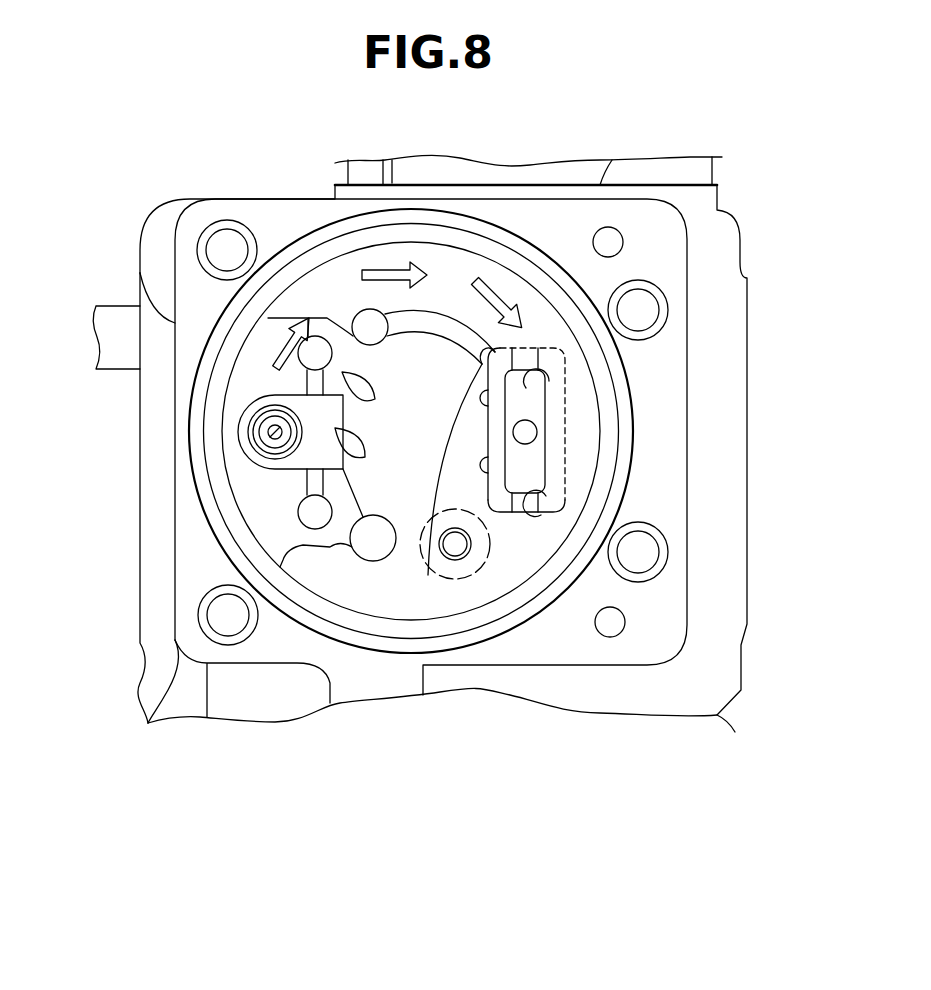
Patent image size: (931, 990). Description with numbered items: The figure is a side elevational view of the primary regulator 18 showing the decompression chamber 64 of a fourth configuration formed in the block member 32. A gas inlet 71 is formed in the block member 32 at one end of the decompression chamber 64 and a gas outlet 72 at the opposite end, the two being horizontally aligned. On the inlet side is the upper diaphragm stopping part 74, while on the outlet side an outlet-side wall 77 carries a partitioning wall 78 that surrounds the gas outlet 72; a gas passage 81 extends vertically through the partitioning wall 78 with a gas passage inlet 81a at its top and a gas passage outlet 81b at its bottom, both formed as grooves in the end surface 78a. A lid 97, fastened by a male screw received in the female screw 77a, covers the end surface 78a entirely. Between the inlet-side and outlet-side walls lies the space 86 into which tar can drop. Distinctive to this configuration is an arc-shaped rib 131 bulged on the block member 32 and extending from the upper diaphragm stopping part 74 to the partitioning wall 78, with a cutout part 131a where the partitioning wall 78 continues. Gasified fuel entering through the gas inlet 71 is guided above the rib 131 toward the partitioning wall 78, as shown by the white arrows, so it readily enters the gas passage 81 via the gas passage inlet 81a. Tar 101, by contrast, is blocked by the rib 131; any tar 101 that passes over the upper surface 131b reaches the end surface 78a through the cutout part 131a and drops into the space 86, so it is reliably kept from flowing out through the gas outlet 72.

The primary regulator 18 is at (124, 198).
The block member 32 is at (662, 235).
The decompression chamber 64 is at (413, 386).
The gas inlet 71 is at (275, 432).
The gas outlet 72 is at (530, 432).
The upper diaphragm stopping part 74 is at (358, 315).
The outlet-side wall 77 is at (457, 580).
The female screw 77a is at (462, 557).
The partitioning wall 78 is at (556, 411).
The partitioning wall end surface 78a is at (515, 518).
The gas passage 81 is at (527, 460).
The gas passage inlet 81a is at (540, 382).
The gas passage outlet 81b is at (538, 505).
The space 86 is at (408, 489).
The lid 97 is at (500, 548).
The tar 101 is at (372, 540).
The arc-shaped rib 131 is at (438, 324).
The cutout part 131a is at (525, 357).
The upper surface of the rib 131b is at (458, 328).